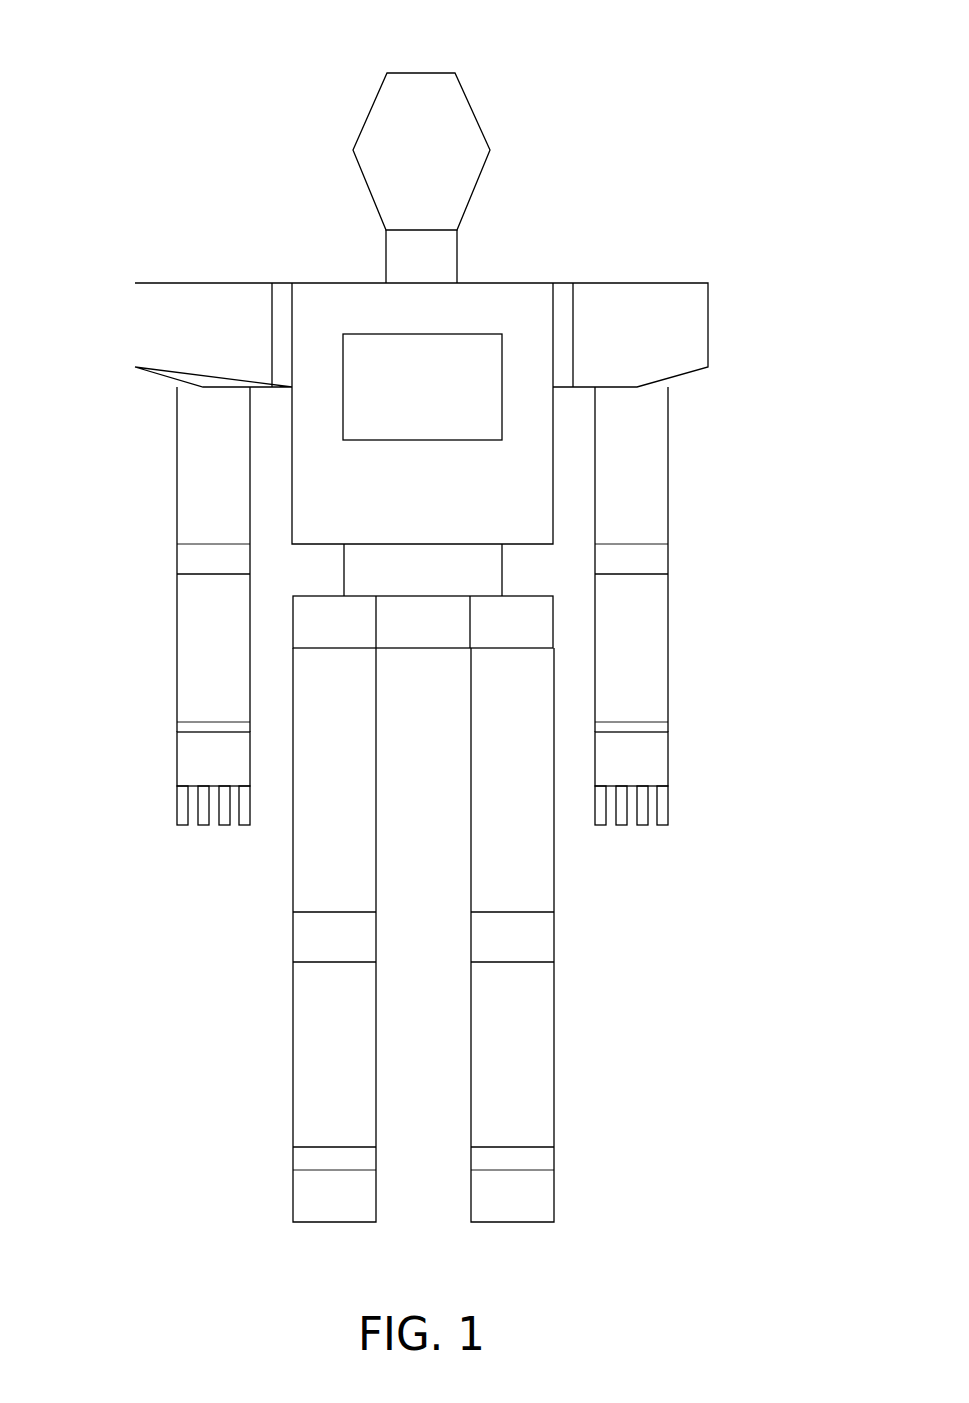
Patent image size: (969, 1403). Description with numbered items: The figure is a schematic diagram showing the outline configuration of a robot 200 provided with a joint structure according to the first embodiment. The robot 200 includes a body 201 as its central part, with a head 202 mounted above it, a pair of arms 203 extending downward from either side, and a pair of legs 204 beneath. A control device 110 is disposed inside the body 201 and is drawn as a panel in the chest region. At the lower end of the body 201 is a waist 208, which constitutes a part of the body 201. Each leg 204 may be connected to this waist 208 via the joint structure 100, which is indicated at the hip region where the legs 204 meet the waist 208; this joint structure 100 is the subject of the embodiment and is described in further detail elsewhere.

The robot 200 is at (436, 26).
The head 202 is at (352, 156).
The body 201 is at (292, 425).
The control device 110 is at (343, 357).
The arm 203 is at (177, 466).
The leg 204 is at (290, 712).
The waist 208 is at (502, 566).
The joint structure 100 is at (554, 629).